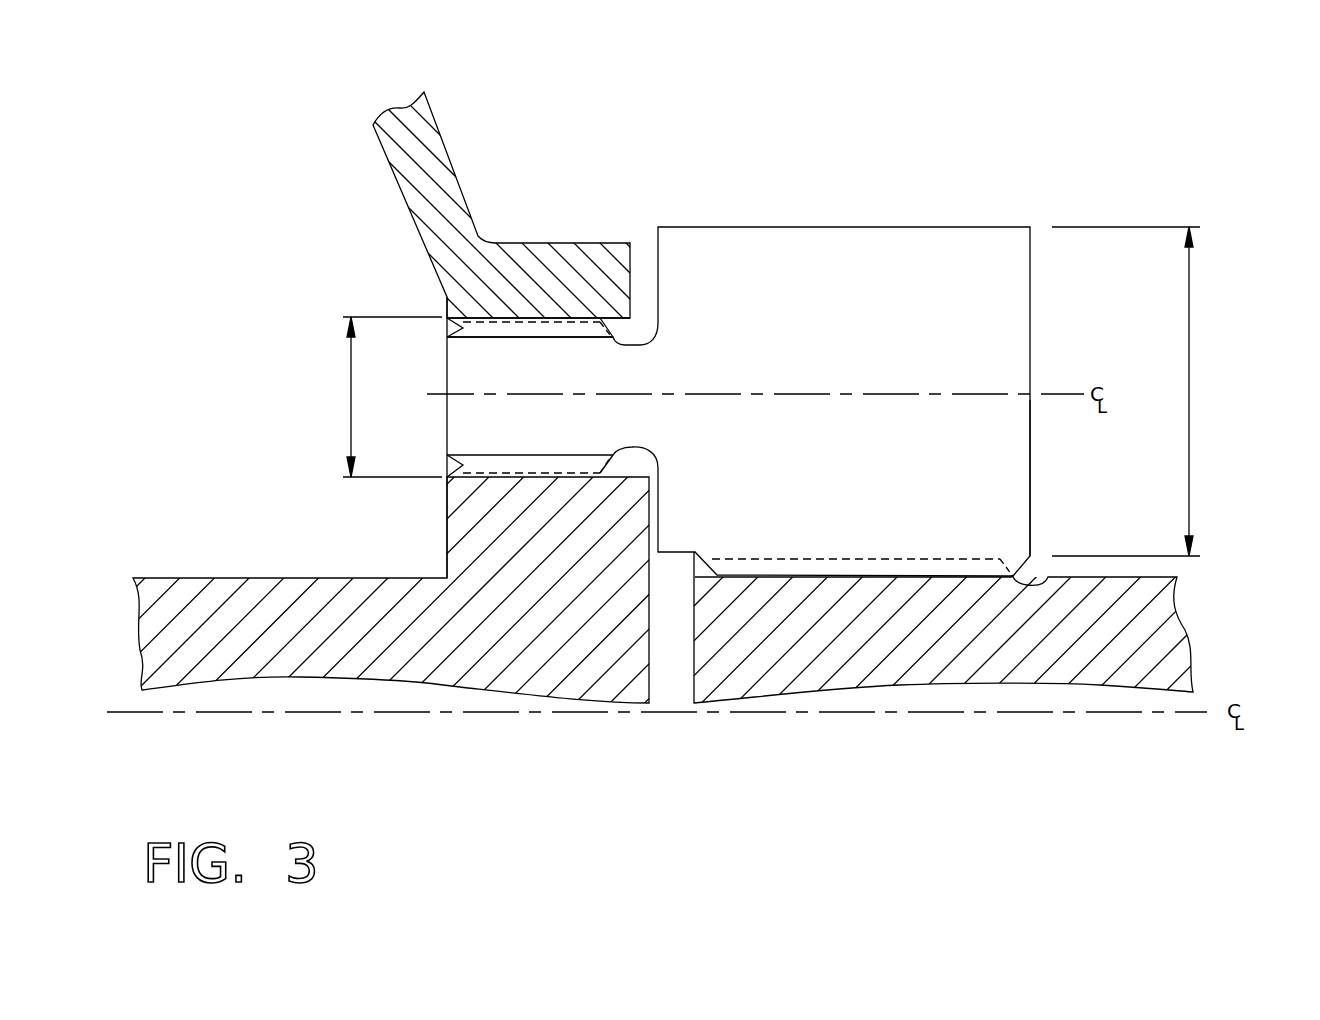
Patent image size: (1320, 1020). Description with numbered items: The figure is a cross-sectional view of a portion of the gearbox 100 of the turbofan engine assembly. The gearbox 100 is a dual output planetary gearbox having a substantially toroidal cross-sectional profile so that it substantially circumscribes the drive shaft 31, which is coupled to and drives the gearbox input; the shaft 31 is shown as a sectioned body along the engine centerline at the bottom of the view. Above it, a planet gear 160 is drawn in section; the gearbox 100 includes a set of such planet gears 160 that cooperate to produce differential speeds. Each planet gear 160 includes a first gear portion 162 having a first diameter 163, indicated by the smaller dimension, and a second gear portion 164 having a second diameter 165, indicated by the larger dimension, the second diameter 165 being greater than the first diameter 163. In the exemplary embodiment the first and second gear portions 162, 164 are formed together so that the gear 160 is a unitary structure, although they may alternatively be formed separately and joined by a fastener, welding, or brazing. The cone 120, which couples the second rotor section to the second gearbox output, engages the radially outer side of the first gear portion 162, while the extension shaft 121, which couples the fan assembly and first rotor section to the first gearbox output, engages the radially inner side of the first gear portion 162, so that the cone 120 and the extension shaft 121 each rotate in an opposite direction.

The gearbox 100 is at (1158, 70).
The cone 120 is at (447, 175).
The extension shaft 121 is at (462, 572).
The planet gear 160 is at (878, 242).
The first gear portion 162 is at (497, 437).
The first diameter 163 is at (351, 395).
The second gear portion 164 is at (1018, 508).
The second diameter 165 is at (1190, 343).
The shaft 31 is at (972, 672).